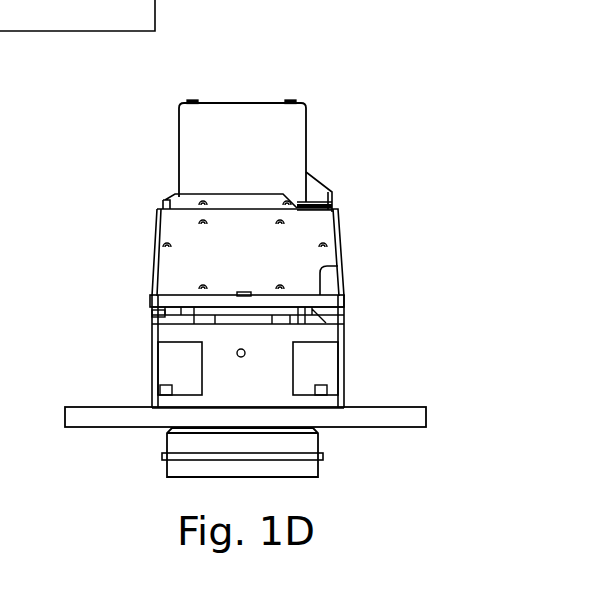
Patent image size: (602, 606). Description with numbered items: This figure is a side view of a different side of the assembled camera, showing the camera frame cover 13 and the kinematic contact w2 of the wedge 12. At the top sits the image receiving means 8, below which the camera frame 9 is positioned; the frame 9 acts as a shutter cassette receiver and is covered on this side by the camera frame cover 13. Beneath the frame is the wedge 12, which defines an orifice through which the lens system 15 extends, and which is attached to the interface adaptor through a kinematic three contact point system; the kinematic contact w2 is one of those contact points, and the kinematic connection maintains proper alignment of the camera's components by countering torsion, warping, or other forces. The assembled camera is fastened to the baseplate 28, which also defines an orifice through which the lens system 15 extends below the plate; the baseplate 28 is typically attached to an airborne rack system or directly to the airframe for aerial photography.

The image receiving means 8 is at (247, 117).
The camera frame 9 is at (155, 247).
The camera frame cover 13 is at (305, 242).
The kinematic contact w2 is at (325, 312).
The wedge 12 is at (330, 405).
The baseplate 28 is at (407, 420).
The lens system 15 is at (298, 468).